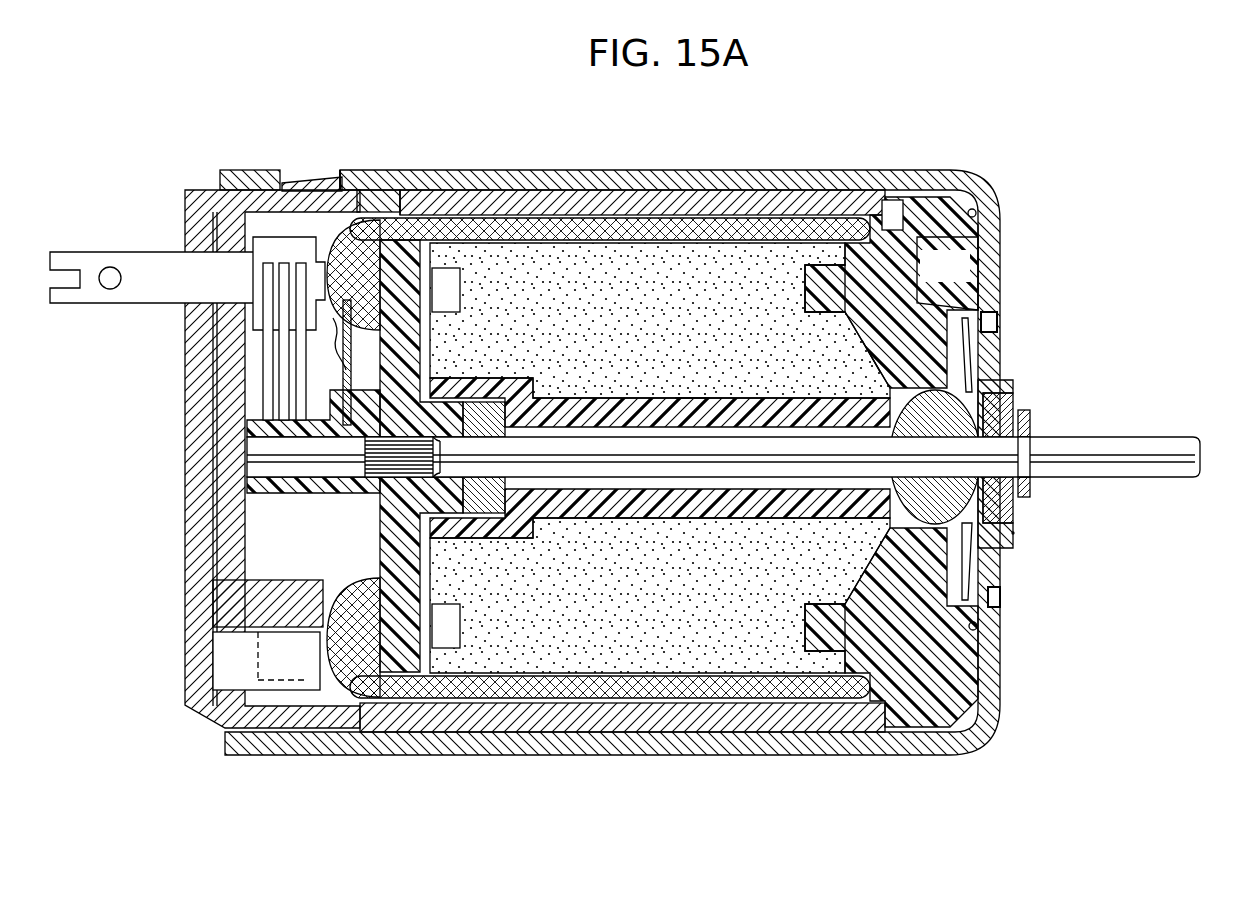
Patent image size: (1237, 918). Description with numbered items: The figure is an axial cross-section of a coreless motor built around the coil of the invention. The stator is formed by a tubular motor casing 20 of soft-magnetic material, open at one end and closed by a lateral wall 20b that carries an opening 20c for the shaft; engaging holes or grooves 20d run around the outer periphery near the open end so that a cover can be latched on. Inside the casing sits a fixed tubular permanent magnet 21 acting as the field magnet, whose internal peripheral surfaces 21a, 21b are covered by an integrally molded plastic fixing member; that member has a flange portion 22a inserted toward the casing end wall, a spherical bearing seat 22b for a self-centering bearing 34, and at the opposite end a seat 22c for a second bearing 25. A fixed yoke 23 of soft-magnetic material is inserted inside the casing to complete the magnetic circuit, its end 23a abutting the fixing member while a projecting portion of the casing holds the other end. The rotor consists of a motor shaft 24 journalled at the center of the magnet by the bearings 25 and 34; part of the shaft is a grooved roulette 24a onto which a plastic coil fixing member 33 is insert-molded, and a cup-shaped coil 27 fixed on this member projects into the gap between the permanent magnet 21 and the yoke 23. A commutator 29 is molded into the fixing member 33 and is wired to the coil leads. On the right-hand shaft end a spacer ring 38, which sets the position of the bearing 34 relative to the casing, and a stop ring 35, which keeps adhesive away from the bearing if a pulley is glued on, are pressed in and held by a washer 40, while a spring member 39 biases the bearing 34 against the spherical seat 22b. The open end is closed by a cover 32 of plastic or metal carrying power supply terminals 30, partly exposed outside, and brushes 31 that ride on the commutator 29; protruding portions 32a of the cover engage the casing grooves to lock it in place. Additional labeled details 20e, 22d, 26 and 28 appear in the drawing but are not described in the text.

The motor casing 20 is at (520, 186).
The lateral wall 20b is at (978, 628).
The opening 20c is at (977, 213).
The engaging holes or grooves 20d is at (345, 180).
The inward bent portion of casing 20e is at (398, 194).
The permanent magnet 21 is at (646, 335).
The internal peripheral surface 21a is at (693, 398).
The internal peripheral surface 21b is at (897, 322).
The flange portion 22a is at (929, 198).
The spherical bearing seat 22b is at (866, 396).
The seat 22c is at (940, 238).
The arm of end bracket 22d is at (814, 300).
The fixed yoke 23 is at (668, 190).
The end of yoke 23a is at (405, 197).
The motor shaft 24 is at (1145, 432).
The grooved roulette 24a is at (362, 453).
The bearing 25 is at (486, 496).
The washer 26 is at (1032, 489).
The coil 27 is at (602, 226).
The commutator 28 is at (346, 400).
The commutator 29 is at (367, 383).
The power supply terminals 30 is at (157, 262).
The brushes 31 is at (300, 372).
The cover 32 is at (185, 348).
The protruding portions 32a is at (300, 182).
The coil fixing member 33 is at (358, 498).
The bearing 34 is at (945, 412).
The stop ring 35 is at (1000, 412).
The spacer ring 38 is at (1000, 506).
The spring member 39 is at (970, 352).
The washer 40 is at (1032, 421).